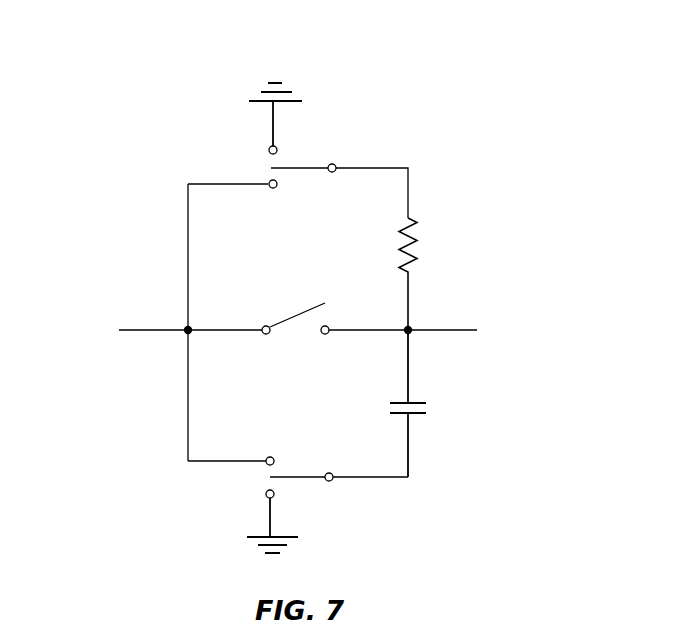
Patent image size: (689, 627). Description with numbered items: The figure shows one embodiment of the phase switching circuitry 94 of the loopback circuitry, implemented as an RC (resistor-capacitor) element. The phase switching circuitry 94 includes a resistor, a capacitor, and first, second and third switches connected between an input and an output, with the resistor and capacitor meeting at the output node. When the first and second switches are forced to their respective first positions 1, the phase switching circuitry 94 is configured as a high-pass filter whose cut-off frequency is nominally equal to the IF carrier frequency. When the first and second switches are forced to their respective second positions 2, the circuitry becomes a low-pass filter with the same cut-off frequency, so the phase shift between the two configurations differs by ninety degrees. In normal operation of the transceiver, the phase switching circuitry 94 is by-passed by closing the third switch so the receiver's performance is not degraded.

The phase switching circuitry 94 is at (373, 82).
The first position 1 is at (262, 300).
The second position 2 is at (261, 344).